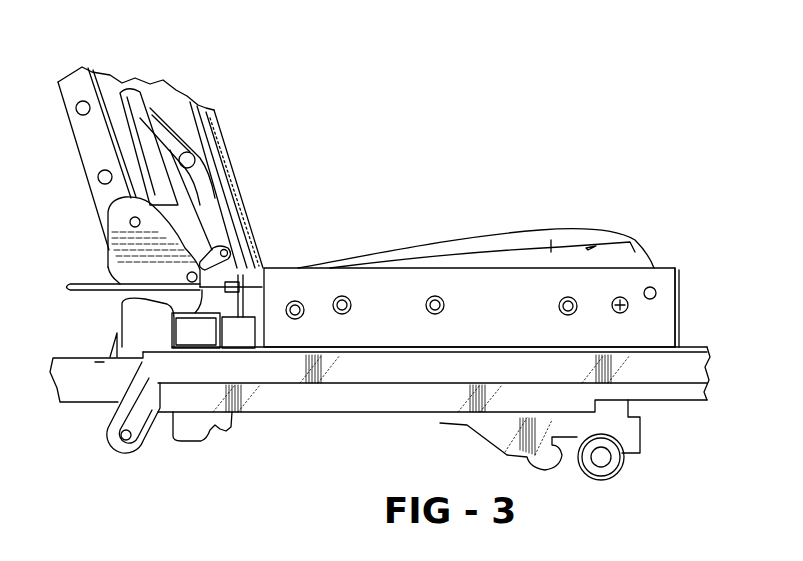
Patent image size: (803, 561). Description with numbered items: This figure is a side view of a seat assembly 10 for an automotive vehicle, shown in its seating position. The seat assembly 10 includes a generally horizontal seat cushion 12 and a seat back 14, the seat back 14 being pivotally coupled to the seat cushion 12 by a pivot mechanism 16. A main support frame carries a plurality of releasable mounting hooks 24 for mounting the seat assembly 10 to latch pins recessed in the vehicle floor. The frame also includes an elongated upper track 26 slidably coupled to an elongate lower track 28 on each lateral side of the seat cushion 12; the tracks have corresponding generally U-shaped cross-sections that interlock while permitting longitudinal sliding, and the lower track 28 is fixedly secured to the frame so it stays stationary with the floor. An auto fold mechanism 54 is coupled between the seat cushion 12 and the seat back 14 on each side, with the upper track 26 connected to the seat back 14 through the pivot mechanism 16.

The seat assembly 10 is at (436, 164).
The seat cushion 12 is at (617, 242).
The seat back 14 is at (212, 108).
The pivot mechanism 16 is at (103, 253).
The releasable mounting hooks 24 is at (218, 435).
The upper track 26 is at (88, 394).
The lower track 28 is at (402, 373).
The auto fold mechanism 54 is at (679, 268).